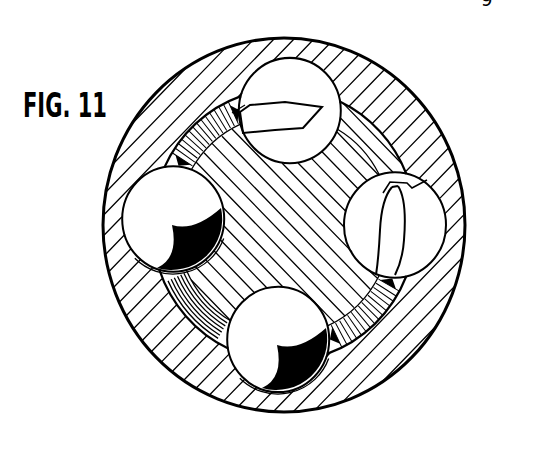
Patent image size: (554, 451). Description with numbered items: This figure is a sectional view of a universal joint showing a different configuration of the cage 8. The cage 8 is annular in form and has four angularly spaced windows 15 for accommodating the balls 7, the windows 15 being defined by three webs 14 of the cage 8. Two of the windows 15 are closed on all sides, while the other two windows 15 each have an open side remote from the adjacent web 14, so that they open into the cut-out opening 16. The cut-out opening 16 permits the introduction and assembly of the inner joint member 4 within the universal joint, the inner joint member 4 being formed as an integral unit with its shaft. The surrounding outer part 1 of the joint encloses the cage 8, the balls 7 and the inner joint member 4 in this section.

The outer ring 1 is at (370, 77).
The inner joint member 4 is at (342, 170).
The balls 7 is at (257, 362).
The cage 8 is at (383, 310).
The webs 14 is at (207, 117).
The windows 15 is at (240, 108).
The cut-out opening 16 is at (433, 193).